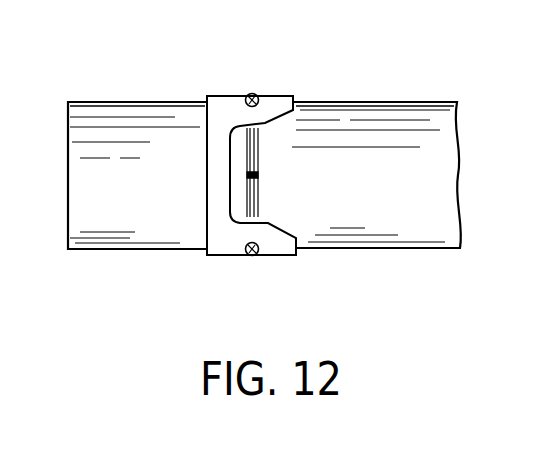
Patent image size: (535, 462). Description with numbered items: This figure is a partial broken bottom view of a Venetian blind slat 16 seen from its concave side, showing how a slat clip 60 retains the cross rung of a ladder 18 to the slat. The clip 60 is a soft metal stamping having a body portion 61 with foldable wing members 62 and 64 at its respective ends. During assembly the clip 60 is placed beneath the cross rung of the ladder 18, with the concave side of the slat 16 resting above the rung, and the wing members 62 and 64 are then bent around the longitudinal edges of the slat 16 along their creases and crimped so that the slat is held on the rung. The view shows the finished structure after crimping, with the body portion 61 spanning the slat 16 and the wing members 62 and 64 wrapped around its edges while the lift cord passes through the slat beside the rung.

The slat 16 is at (378, 122).
The ladder 18 is at (258, 95).
The clip 60 is at (239, 187).
The body portion 61 is at (218, 182).
The wing member 62 is at (222, 96).
The wing member 64 is at (230, 256).